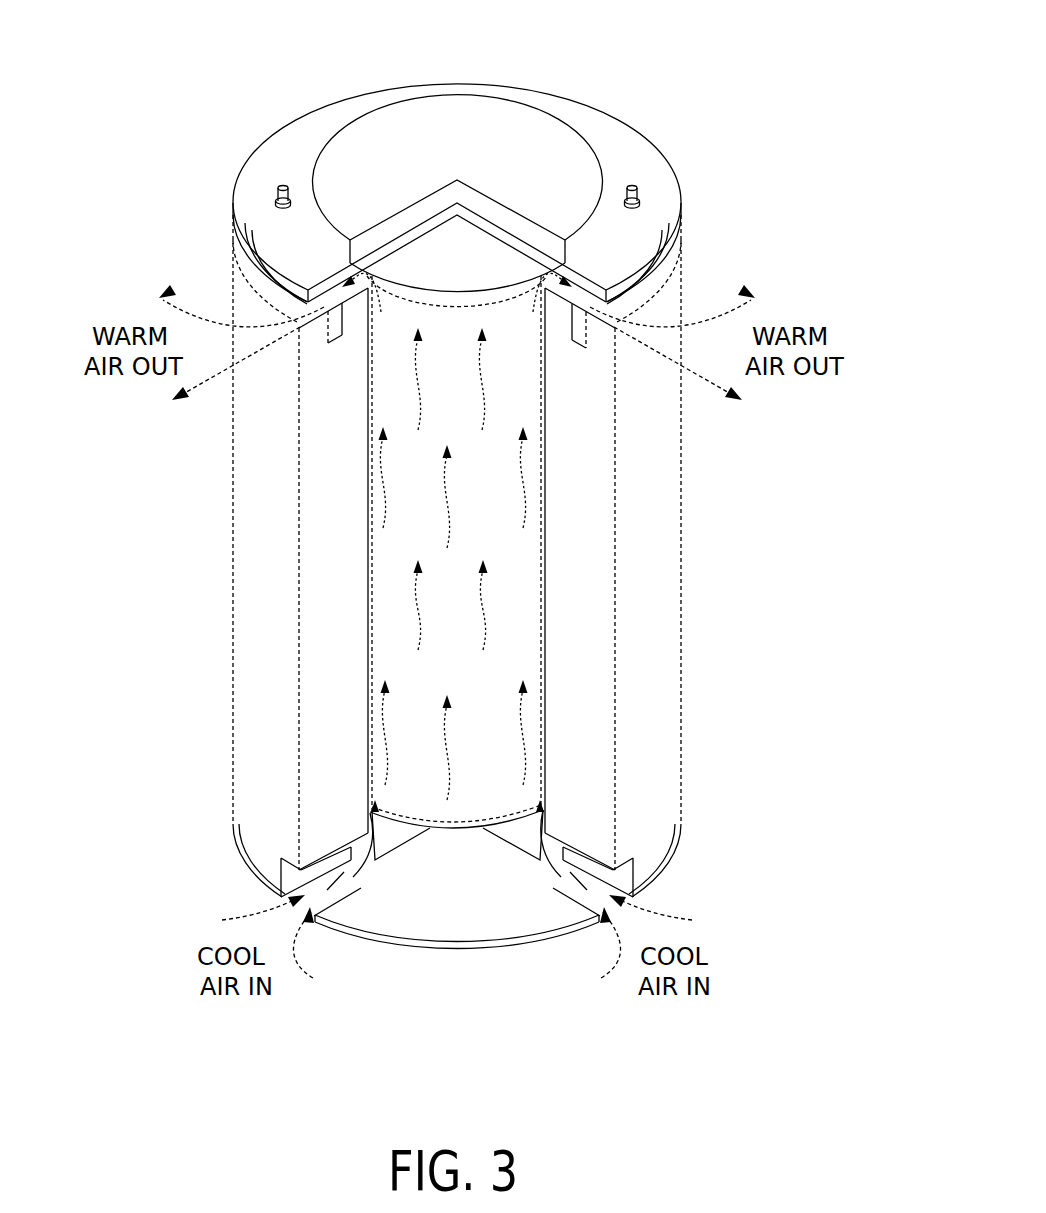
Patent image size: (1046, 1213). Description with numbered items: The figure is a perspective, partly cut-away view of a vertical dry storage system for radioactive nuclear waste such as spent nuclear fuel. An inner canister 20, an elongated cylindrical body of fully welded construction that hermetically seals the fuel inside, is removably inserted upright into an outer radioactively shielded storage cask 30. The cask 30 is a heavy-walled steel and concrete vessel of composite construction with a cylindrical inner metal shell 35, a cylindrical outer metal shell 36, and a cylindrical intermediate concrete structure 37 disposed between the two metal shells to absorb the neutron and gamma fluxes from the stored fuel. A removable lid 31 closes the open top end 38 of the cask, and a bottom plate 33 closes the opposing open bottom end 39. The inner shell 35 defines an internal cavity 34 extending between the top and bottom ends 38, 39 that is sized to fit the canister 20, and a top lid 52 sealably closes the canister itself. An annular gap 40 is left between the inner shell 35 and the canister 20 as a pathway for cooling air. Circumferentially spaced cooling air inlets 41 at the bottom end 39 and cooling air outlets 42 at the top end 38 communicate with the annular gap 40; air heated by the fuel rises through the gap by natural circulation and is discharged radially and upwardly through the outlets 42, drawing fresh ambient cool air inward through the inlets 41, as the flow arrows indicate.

The inner canister 20 is at (516, 608).
The storage cask 30 is at (224, 690).
The removable lid 31 is at (503, 133).
The bottom plate 33 is at (520, 945).
The internal cavity 34 is at (382, 652).
The inner metal shell 35 is at (370, 599).
The outer metal shell 36 is at (681, 740).
The intermediate concrete structure 37 is at (572, 507).
The top end 38 is at (363, 90).
The bottom end 39 is at (397, 958).
The annular gap 40 is at (504, 389).
The cooling air inlets 41 is at (638, 870).
The cooling air outlets 42 is at (625, 300).
The top lid 52 is at (493, 263).